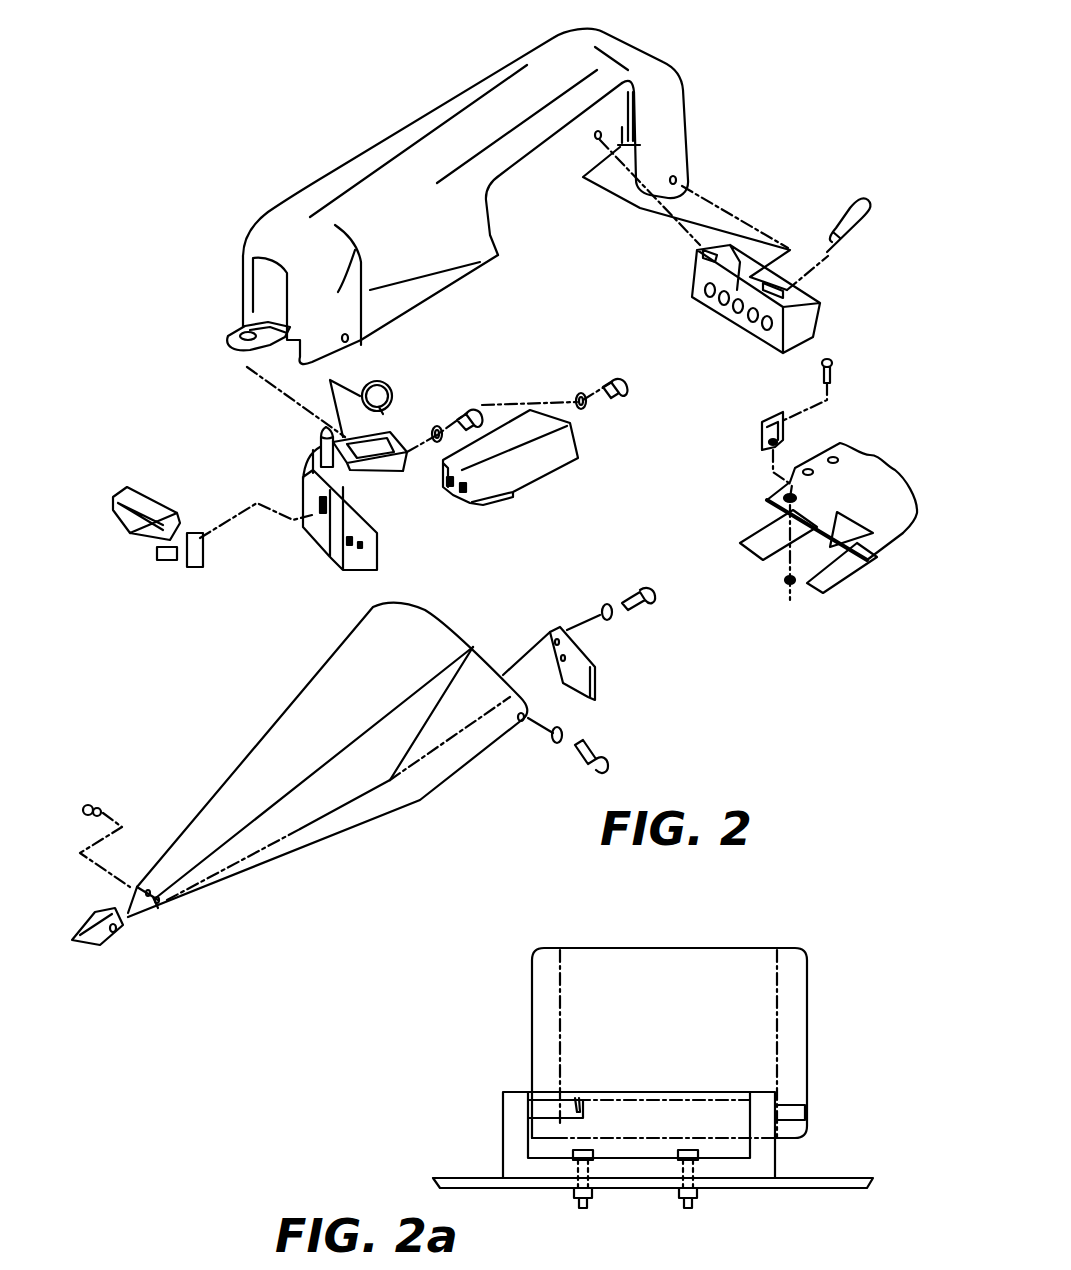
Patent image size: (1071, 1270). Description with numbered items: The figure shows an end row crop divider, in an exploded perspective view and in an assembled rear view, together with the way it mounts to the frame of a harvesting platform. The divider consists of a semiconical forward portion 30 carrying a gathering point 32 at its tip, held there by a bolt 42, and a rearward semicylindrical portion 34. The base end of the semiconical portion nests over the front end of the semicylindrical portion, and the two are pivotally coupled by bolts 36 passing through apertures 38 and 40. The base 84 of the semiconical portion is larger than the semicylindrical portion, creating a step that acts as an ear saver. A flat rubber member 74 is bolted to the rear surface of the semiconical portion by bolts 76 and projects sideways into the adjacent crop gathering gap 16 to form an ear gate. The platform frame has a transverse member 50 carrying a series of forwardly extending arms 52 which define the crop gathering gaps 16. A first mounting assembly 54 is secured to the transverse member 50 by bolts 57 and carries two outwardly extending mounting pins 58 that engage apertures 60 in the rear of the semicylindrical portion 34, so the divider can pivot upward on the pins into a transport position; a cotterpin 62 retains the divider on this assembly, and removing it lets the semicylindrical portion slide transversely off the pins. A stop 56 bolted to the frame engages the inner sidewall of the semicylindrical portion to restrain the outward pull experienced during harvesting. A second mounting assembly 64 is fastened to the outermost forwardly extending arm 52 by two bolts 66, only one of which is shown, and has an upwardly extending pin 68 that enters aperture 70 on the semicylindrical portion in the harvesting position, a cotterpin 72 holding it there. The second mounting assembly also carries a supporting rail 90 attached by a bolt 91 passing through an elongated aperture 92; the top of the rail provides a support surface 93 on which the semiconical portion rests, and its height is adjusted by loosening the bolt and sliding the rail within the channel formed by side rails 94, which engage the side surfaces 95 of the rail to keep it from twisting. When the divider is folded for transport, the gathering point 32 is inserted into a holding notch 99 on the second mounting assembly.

In FIG. 2, the crop gathering gap 16 is at (781, 582).
In FIG. 2, the semiconical forward portion 30 is at (330, 667).
In FIG. 2, the gathering point 32 is at (103, 940).
In FIG. 2, the semicylindrical portion 34 is at (330, 176).
In FIG. 2A, the semicylindrical portion 34 is at (807, 992).
In FIG. 2, the bolts 36 is at (593, 743).
In FIG. 2, the aperture 38 is at (521, 722).
In FIG. 2, the aperture 40 is at (350, 339).
In FIG. 2, the bolt 42 is at (100, 806).
In FIG. 2, the transverse member 50 is at (878, 477).
In FIG. 2A, the transverse member 50 is at (825, 1180).
In FIG. 2, the forwardly extending arms 52 is at (547, 473).
In FIG. 2, the first mounting assembly 54 is at (737, 257).
In FIG. 2A, the first mounting assembly 54 is at (760, 1092).
In FIG. 2, the stop 56 is at (762, 437).
In FIG. 2A, the bolts 57 is at (578, 1205).
In FIG. 2, the mounting pins 58 is at (703, 253).
In FIG. 2A, the mounting pins 58 is at (585, 1110).
In FIG. 2, the apertures 60 is at (595, 139).
In FIG. 2, the cotterpin 62 is at (872, 205).
In FIG. 2A, the cotterpin 62 is at (576, 1098).
In FIG. 2, the second mounting assembly 64 is at (248, 483).
In FIG. 2, the bolts 66 is at (620, 373).
In FIG. 2, the upwardly extending pin 68 is at (318, 445).
In FIG. 2, the aperture 70 is at (219, 336).
In FIG. 2, the cotterpin 72 is at (392, 390).
In FIG. 2, the flat rubber member 74 is at (593, 647).
In FIG. 2, the bolts 76 is at (648, 600).
In FIG. 2, the base 84 is at (350, 290).
In FIG. 2, the supporting rail 90 is at (100, 509).
In FIG. 2, the bolt 91 is at (470, 405).
In FIG. 2, the elongated aperture 92 is at (318, 540).
In FIG. 2, the support surface 93 is at (142, 500).
In FIG. 2, the side rails 94 is at (318, 515).
In FIG. 2, the side surfaces 95 is at (160, 562).
In FIG. 2, the holding notch 99 is at (384, 440).